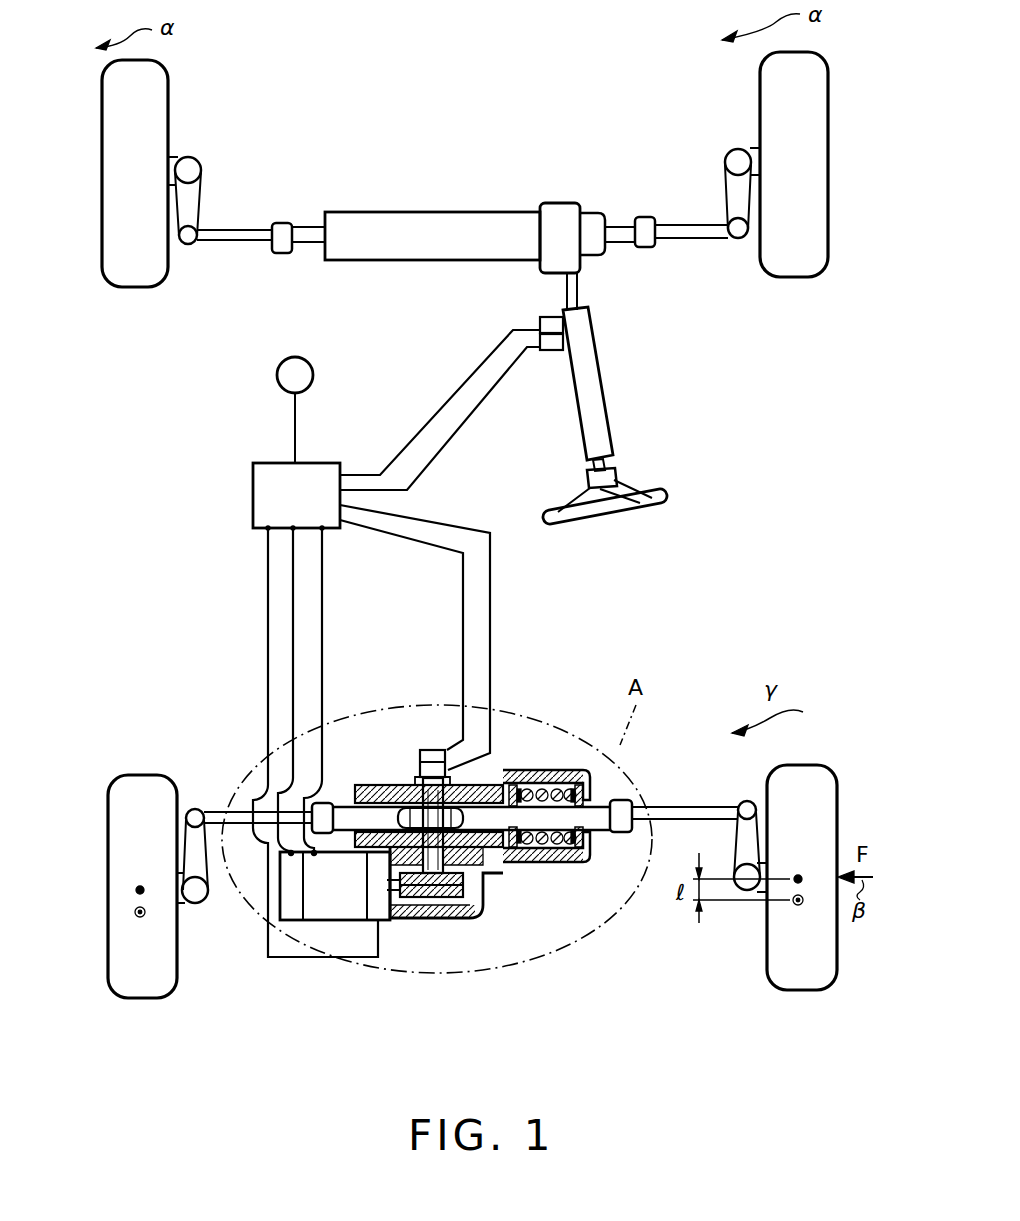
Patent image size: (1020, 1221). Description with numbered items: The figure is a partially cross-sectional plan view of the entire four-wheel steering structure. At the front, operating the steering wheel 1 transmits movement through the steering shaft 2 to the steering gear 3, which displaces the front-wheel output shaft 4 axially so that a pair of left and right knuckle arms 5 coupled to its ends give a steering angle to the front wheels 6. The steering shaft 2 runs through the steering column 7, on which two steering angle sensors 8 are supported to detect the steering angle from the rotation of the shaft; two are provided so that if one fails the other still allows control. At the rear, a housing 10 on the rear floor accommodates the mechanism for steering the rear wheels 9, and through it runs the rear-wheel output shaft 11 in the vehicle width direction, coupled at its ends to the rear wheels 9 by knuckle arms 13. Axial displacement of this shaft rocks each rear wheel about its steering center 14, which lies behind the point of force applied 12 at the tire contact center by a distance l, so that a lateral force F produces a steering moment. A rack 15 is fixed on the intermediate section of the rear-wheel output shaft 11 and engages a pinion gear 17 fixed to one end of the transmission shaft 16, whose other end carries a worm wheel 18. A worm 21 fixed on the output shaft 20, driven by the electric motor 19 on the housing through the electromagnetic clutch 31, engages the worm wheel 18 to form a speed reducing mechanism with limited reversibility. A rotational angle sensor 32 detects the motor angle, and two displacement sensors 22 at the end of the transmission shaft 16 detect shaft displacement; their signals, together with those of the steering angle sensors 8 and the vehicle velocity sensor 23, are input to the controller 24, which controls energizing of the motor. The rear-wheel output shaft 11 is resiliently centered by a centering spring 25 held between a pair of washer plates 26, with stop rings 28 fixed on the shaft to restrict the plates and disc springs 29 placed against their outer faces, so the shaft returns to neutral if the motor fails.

The steering wheel 1 is at (660, 500).
The steering shaft 2 is at (580, 289).
The steering gear 3 is at (557, 213).
The front-wheel output shaft 4 is at (672, 232).
The knuckle arm 5 is at (196, 200).
The front wheel 6 is at (155, 103).
The steering column 7 is at (600, 392).
The steering angle sensor 8 is at (548, 325).
The rear wheel 9 is at (163, 790).
The housing 10 is at (560, 774).
The rear-wheel output shaft 11 is at (520, 866).
The point of force applied 12 is at (146, 896).
The knuckle arm 13 is at (197, 899).
The steering center 14 is at (138, 918).
The rack 15 is at (490, 786).
The transmission shaft 16 is at (488, 870).
The pinion gear 17 is at (396, 790).
The worm wheel 18 is at (460, 920).
The electric motor 19 is at (318, 905).
The output shaft 20 is at (398, 920).
The worm 21 is at (432, 898).
The displacement sensor 22 is at (420, 775).
The vehicle velocity sensor 23 is at (300, 368).
The controller 24 is at (326, 470).
The centering spring 25 is at (545, 866).
The washer plate 26 is at (580, 863).
The stop ring 28 is at (588, 801).
The disc spring 29 is at (518, 790).
The electromagnetic clutch 31 is at (368, 910).
The rotational angle sensor 32 is at (270, 955).